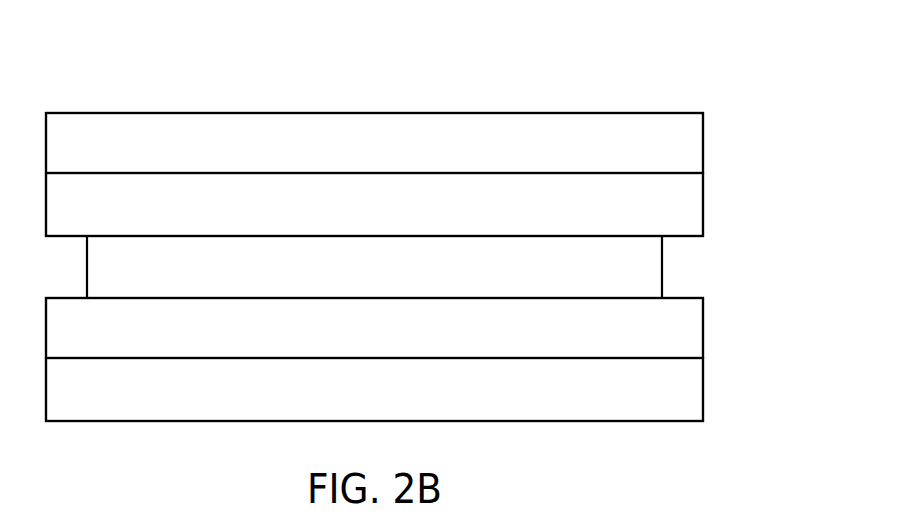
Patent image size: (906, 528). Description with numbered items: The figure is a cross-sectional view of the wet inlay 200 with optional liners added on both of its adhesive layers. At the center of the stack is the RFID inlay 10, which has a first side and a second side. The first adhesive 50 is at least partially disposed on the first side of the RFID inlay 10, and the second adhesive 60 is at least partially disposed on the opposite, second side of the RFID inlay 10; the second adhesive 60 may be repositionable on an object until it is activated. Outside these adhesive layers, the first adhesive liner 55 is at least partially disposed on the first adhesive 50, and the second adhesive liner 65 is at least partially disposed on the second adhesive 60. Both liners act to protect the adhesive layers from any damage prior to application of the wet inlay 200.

The wet inlay 200 is at (413, 217).
The first adhesive liner 55 is at (683, 155).
The first adhesive 50 is at (683, 209).
The RFID inlay 10 is at (642, 278).
The second adhesive 60 is at (683, 337).
The second adhesive liner 65 is at (683, 393).